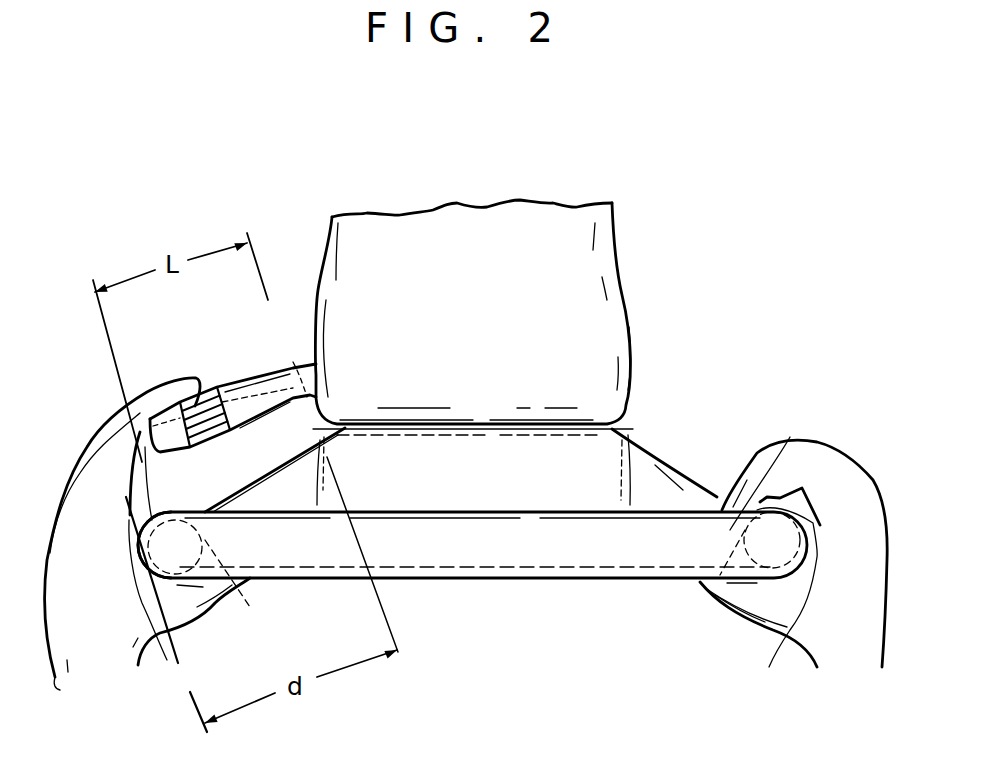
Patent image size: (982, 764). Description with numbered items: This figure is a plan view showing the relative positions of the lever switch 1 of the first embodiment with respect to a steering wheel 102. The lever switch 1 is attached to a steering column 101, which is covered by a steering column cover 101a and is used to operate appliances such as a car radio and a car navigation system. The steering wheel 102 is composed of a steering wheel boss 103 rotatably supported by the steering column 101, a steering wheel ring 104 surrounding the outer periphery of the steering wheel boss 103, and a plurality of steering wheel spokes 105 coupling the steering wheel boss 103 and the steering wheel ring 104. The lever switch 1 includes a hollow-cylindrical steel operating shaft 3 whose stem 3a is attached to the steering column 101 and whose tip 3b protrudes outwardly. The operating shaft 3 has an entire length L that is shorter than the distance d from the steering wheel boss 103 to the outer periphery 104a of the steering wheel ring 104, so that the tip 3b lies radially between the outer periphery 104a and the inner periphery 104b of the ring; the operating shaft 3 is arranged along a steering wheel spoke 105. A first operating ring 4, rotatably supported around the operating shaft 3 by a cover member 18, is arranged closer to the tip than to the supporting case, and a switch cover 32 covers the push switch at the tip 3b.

The lever switch 1 is at (238, 362).
The operating shaft 3 is at (298, 368).
The stem 3a is at (298, 360).
The tip 3b is at (170, 448).
The first operating ring 4 is at (192, 410).
The cover member 18 is at (277, 420).
The switch cover 32 is at (154, 532).
The steering column 101 is at (623, 292).
The steering column cover 101a is at (612, 330).
The steering wheel 102 is at (693, 505).
The steering wheel boss 103 is at (630, 453).
The steering wheel ring 104 is at (790, 437).
The outer periphery 104a is at (475, 643).
The inner periphery 104b is at (240, 590).
The steering wheel spoke 105 is at (663, 470).